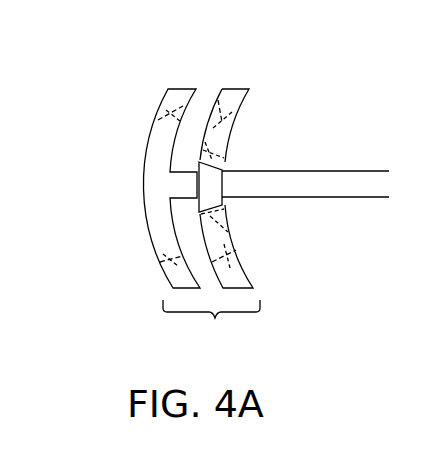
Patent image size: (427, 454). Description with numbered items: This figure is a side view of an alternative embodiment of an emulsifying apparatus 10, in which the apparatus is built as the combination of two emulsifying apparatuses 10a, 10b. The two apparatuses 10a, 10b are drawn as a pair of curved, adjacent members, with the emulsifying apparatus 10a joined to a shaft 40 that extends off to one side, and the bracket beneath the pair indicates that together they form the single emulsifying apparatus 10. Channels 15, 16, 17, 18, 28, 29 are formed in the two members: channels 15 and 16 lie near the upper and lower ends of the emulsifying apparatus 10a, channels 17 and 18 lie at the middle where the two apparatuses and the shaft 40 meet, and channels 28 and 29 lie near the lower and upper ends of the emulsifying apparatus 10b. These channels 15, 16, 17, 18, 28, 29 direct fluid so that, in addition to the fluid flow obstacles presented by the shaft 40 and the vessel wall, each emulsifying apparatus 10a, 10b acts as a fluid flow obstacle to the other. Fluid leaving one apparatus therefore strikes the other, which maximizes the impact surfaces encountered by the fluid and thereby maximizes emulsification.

The emulsifying apparatus 10 is at (211, 325).
The emulsifying apparatus 10a is at (236, 88).
The emulsifying apparatus 10b is at (182, 88).
The shaft 40 is at (358, 170).
The channel 15 is at (218, 122).
The channel 16 is at (225, 258).
The channel 17 is at (222, 208).
The channel 18 is at (225, 166).
The channel 28 is at (163, 267).
The channel 29 is at (170, 112).